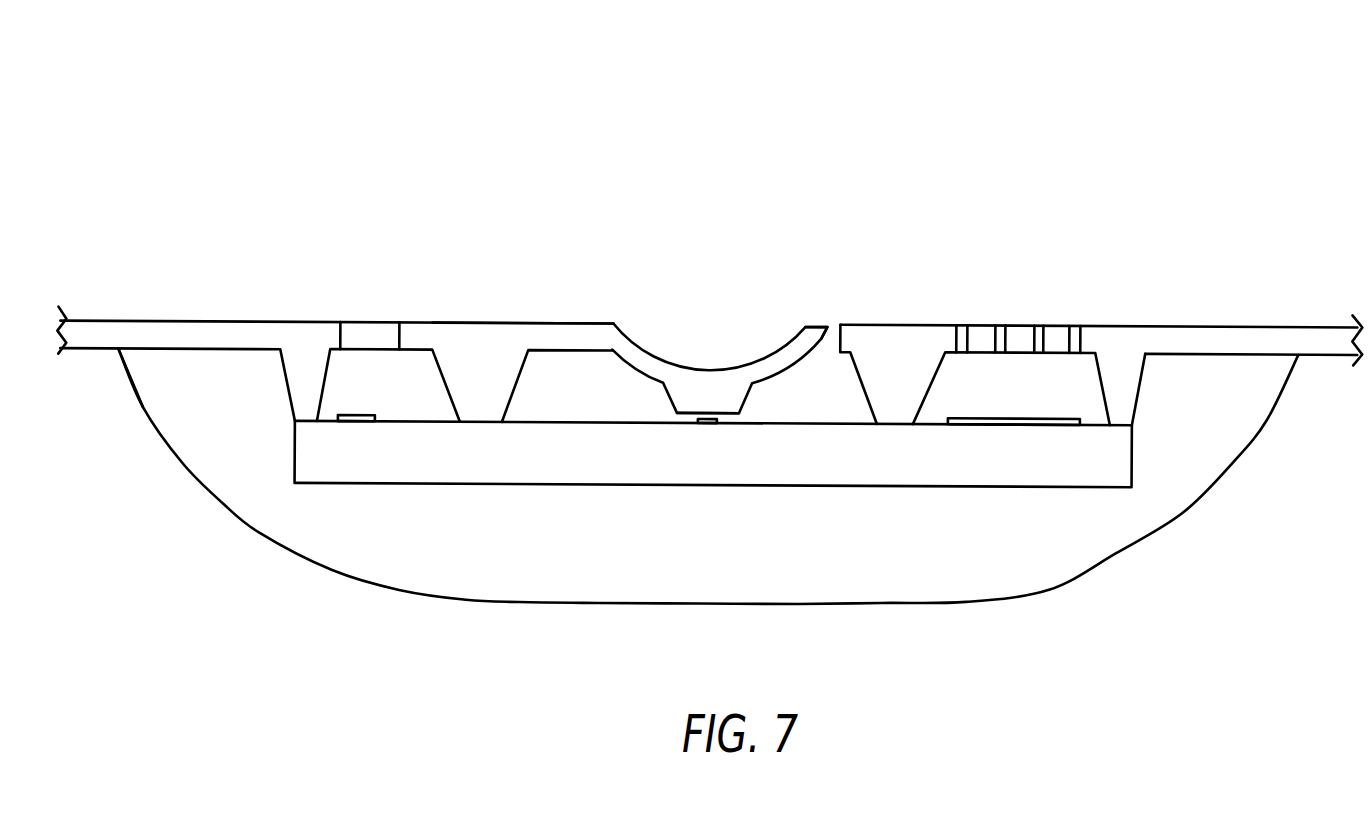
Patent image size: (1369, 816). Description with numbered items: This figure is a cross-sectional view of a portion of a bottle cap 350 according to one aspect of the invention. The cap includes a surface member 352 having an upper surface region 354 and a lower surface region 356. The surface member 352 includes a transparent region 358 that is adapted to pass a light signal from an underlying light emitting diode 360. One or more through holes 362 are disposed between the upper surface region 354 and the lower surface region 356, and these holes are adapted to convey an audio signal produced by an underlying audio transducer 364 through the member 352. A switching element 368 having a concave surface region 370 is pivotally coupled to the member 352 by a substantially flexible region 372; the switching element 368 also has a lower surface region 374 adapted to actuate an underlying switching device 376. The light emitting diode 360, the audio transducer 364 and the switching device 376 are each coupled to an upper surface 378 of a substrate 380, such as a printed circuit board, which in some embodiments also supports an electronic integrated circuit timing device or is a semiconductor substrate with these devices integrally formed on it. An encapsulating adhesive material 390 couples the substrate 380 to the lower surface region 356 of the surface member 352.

The optical sensor package 350 is at (710, 354).
The surface member 352 is at (112, 328).
The upper surface region 354 is at (210, 326).
The lower surface region 356 is at (150, 355).
The transparent region 358 is at (373, 334).
The light emitting diode 360 is at (367, 417).
The through holes 362 is at (960, 326).
The audio transducer 364 is at (1068, 416).
The switching element 368 is at (815, 325).
The concave surface region 370 is at (717, 368).
The substantially flexible region 372 is at (582, 326).
The lower surface region 374 is at (722, 425).
The switching device 376 is at (707, 425).
The upper surface 378 is at (537, 421).
The substrate 380 is at (1012, 453).
The encapsulating adhesive material 390 is at (257, 515).